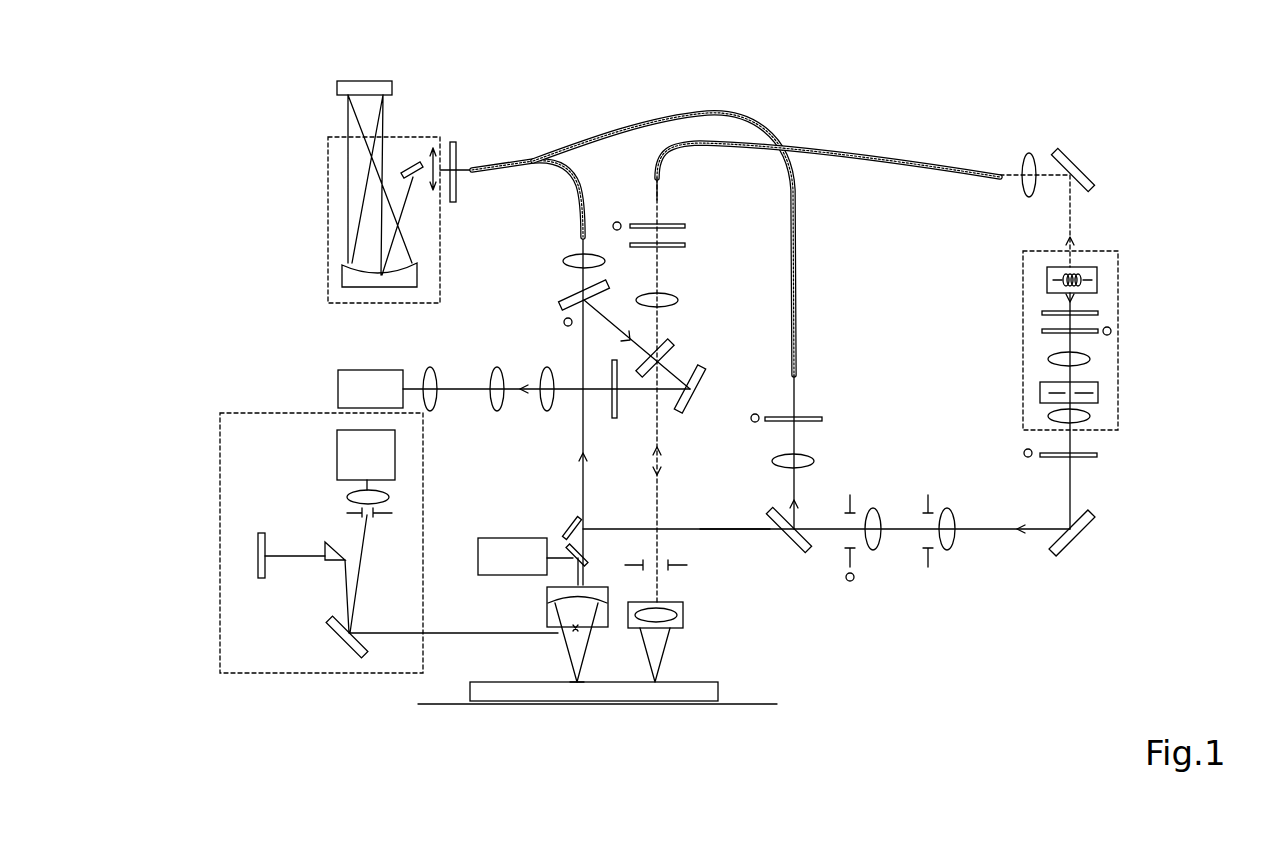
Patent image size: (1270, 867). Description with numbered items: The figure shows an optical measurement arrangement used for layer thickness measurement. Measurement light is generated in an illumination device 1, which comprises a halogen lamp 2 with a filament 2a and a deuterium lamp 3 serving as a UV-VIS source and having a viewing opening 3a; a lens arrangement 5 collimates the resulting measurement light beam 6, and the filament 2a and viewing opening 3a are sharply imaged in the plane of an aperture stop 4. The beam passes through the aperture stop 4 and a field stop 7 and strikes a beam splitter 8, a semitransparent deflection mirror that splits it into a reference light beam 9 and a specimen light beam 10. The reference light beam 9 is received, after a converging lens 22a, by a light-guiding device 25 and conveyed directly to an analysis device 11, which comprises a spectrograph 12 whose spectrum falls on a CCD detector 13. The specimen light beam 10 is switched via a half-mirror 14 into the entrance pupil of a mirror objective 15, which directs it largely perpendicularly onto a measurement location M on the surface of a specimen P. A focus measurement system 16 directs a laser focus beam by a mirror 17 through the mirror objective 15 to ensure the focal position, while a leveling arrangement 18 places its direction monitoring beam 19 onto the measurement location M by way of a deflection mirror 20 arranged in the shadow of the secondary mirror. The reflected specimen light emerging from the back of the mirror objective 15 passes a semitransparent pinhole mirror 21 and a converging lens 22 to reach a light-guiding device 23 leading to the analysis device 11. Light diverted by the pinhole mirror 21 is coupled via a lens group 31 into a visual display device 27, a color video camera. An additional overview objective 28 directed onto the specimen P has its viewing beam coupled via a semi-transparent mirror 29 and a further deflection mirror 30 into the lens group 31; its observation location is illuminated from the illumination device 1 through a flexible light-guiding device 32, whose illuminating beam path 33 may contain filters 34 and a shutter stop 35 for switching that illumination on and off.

The illumination device 1 is at (1110, 253).
The halogen lamp 2 is at (1097, 273).
The filament 2a is at (1057, 278).
The deuterium lamp 3 is at (1097, 387).
The viewing opening 3a is at (1067, 390).
The aperture stop 4 is at (930, 558).
The lens arrangement 5 is at (1090, 415).
The measurement light beam 6 is at (1072, 487).
The field stop 7 is at (852, 558).
The beam splitter 8 is at (800, 548).
The reference light beam 9 is at (797, 478).
The specimen light beam 10 is at (732, 532).
The analysis device 11 is at (330, 143).
The spectrograph 12 is at (348, 280).
The CCD detector 13 is at (385, 88).
The deflecting mirror 14 is at (567, 530).
The mirror objective 15 is at (557, 598).
The focus measurement system 16 is at (492, 567).
The mirror 17 is at (583, 553).
The leveling arrangement 18 is at (227, 413).
The direction monitoring beam 19 is at (392, 633).
The deflection mirror 20 is at (576, 627).
The pinhole mirror 21 is at (560, 303).
The converging lens 22 is at (575, 258).
The converging lens 22a is at (812, 458).
The light-guiding device 23 is at (583, 185).
The light-guiding device 25 is at (792, 185).
The visual display device 27 is at (350, 385).
The objective 28 is at (683, 626).
The semi-transparent mirror 29 is at (680, 347).
The deflection mirror 30 is at (687, 405).
The lens group 31 is at (540, 378).
The flexible light-guiding device 32 is at (943, 167).
The beam path 33 is at (660, 200).
The filters 34 is at (683, 248).
The shutter stop 35 is at (685, 227).
The measurement location M is at (577, 682).
The specimen P is at (595, 697).